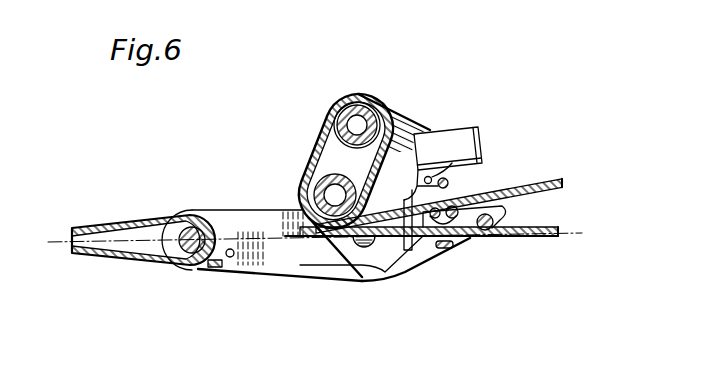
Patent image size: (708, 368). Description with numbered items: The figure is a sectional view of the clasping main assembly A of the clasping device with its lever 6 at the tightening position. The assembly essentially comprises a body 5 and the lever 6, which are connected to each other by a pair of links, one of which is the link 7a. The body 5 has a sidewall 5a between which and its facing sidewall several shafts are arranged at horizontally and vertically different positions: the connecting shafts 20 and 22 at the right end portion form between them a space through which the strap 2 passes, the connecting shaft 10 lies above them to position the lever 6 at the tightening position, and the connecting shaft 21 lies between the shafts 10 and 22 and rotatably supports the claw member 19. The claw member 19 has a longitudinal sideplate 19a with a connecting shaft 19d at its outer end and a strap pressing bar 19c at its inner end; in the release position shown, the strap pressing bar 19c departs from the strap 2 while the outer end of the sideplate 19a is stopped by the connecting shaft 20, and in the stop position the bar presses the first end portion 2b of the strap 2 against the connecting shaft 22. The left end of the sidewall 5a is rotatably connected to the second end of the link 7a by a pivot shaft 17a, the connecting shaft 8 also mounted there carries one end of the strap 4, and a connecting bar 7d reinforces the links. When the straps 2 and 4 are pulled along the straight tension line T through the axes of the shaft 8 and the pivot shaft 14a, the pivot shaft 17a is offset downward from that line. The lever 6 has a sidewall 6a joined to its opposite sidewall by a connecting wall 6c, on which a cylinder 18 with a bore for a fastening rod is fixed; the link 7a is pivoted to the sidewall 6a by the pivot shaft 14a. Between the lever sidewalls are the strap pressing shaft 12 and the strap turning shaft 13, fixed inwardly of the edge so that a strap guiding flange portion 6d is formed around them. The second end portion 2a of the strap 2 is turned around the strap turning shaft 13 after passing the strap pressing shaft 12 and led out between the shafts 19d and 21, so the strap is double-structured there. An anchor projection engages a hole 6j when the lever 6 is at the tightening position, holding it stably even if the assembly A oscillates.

The strap 2 is at (536, 241).
The second end portion 2a is at (563, 182).
The first end portion 2b is at (573, 238).
The strap 4 is at (121, 227).
The body 5 is at (318, 283).
The sidewall 5a is at (298, 281).
The lever 6 is at (394, 107).
The sidewall 6a is at (411, 186).
The connecting wall 6c is at (447, 181).
The strap guiding flange portion 6d is at (319, 137).
The hole 6j is at (483, 160).
The link 7a is at (252, 222).
The connecting bar 7d is at (213, 268).
The connecting shaft 8 is at (192, 227).
The connecting shaft 10 is at (460, 182).
The strap pressing shaft 12 is at (415, 132).
The strap turning shaft 13 is at (361, 93).
The pivot shaft 14a is at (363, 247).
The pivot shaft 17a is at (230, 257).
The cylinder 18 is at (480, 137).
The claw member 19 is at (512, 201).
The longitudinal sideplate 19a is at (493, 207).
The strap pressing bar 19c is at (431, 238).
The connecting shaft 19d is at (561, 178).
The connecting shaft 20 is at (487, 231).
The connecting shaft 21 is at (458, 219).
The connecting shaft 22 is at (444, 249).
The tension line T is at (60, 242).
The clasping main assembly A is at (330, 90).